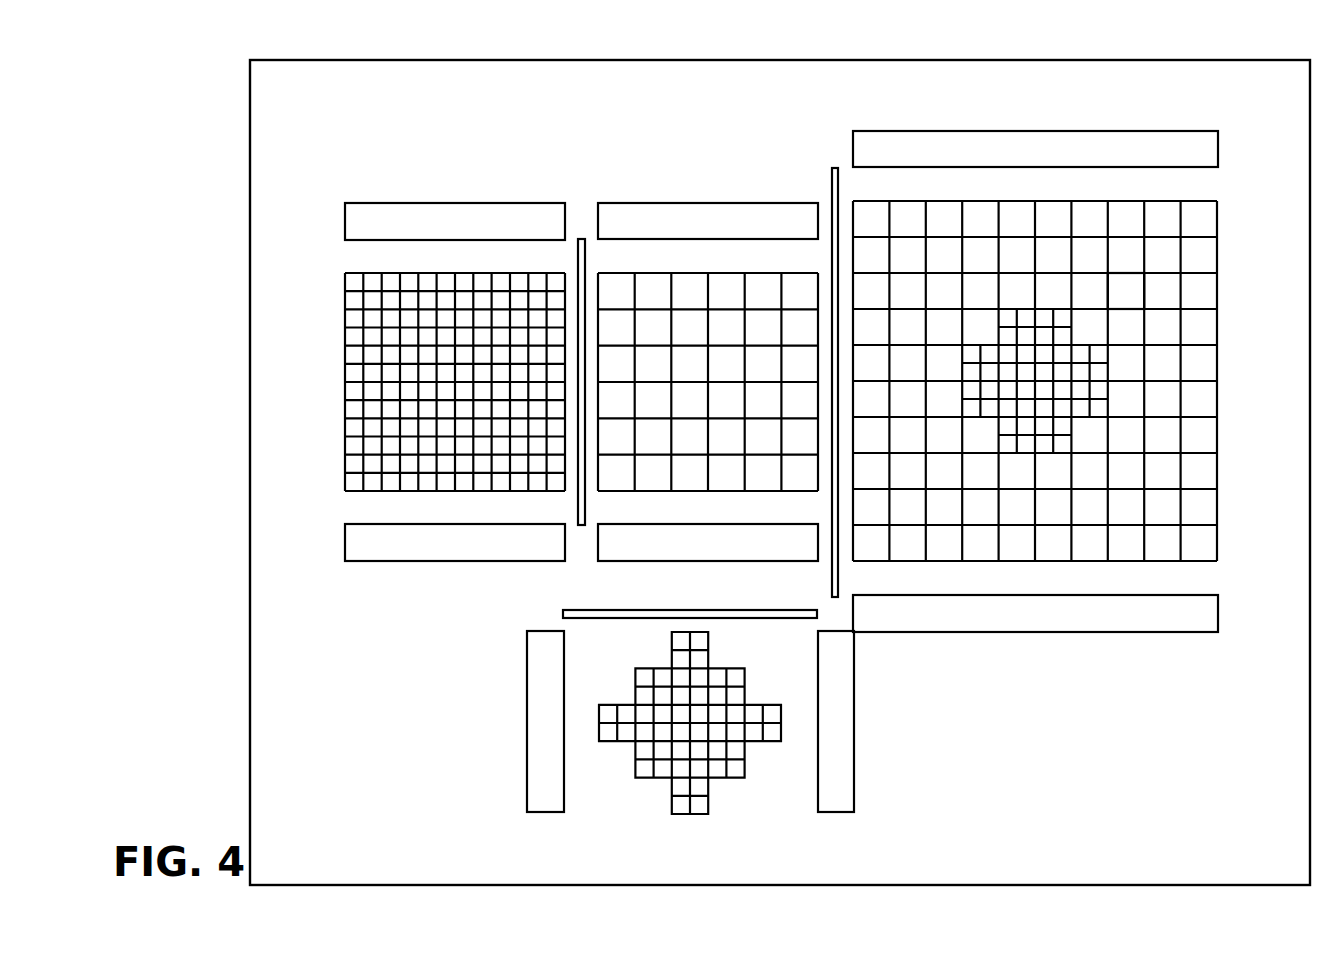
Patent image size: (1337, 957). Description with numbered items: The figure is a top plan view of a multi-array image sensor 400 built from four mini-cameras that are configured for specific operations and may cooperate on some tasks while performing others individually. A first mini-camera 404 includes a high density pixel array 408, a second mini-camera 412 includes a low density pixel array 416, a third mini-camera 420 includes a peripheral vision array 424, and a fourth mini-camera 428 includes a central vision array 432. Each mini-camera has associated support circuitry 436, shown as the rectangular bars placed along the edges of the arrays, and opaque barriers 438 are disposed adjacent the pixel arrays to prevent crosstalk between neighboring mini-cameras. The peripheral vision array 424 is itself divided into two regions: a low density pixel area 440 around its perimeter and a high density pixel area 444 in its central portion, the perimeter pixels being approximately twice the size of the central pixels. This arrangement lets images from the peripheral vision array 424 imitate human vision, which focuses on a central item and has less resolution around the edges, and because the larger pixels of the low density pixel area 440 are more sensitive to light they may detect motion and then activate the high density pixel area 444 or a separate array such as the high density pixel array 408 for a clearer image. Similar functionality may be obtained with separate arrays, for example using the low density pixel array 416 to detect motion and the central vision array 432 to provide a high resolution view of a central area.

The sensor 400 is at (1097, 58).
The first mini-camera 404 is at (418, 333).
The high density pixel array 408 is at (345, 340).
The second mini-camera 412 is at (742, 283).
The low density pixel array 416 is at (617, 273).
The third mini-camera 420 is at (1074, 312).
The peripheral vision array 424 is at (1074, 367).
The fourth mini-camera 428 is at (661, 739).
The central vision array 432 is at (738, 680).
The support circuitry 436 is at (460, 203).
The opaque barriers 438 is at (586, 492).
The low density pixel area 440 is at (1130, 298).
The high density pixel area 444 is at (1062, 390).